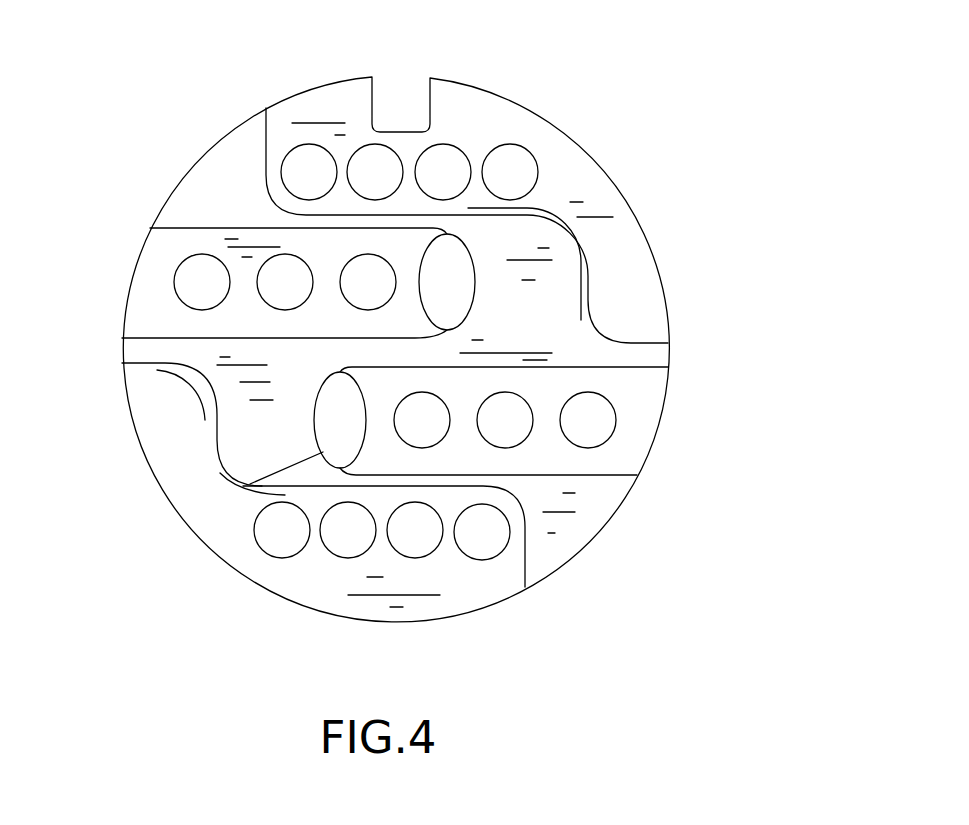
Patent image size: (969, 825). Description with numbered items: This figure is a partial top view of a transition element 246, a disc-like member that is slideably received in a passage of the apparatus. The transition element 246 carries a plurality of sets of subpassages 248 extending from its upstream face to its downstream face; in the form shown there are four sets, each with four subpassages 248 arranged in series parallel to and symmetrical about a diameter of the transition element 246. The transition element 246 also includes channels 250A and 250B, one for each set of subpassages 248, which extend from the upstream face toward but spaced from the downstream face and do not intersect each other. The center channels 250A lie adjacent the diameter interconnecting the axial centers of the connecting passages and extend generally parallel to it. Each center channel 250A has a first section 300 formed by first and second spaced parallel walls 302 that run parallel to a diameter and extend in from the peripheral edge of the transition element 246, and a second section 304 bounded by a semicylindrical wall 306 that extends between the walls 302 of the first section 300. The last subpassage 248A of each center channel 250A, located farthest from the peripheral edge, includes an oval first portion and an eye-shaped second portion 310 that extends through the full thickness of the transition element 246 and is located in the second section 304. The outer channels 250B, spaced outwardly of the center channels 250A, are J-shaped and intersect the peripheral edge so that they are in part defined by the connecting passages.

The transition element 246 is at (633, 206).
The subpassages 248 is at (372, 167).
The last subpassage 248A is at (443, 255).
The center channels 250A is at (153, 248).
The outer channels 250B is at (563, 158).
The first section 300 is at (630, 468).
The first and second walls 302 is at (230, 228).
The second section 304 is at (313, 428).
The semicylindrical wall 306 is at (243, 487).
The second portion 310 is at (458, 277).